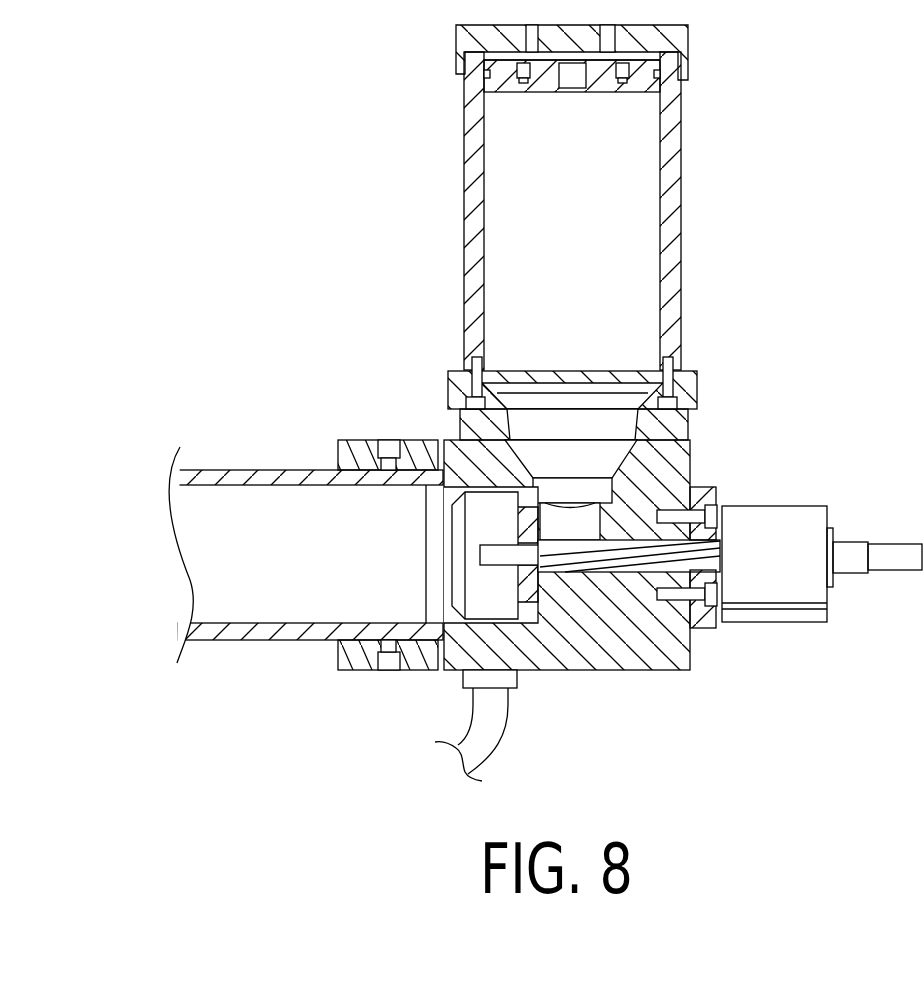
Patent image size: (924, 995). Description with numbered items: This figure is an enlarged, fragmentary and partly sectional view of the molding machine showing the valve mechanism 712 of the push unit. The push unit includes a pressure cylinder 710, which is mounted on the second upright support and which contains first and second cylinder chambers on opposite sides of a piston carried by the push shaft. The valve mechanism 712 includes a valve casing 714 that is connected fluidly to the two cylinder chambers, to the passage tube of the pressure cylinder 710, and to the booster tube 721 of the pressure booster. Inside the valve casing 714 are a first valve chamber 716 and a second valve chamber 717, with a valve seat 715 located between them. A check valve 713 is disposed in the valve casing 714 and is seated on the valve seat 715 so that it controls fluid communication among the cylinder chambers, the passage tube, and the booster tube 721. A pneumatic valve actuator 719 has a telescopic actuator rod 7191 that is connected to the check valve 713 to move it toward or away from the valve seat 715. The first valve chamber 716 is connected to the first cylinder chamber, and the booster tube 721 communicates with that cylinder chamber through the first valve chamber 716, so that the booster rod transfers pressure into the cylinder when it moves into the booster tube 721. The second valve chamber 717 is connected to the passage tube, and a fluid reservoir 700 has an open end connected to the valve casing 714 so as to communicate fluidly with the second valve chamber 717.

The fluid reservoir 700 is at (683, 188).
The pressure cylinder 710 is at (243, 468).
The valve mechanism 712 is at (424, 376).
The check valve 713 is at (550, 585).
The valve casing 714 is at (696, 458).
The valve seat 715 is at (525, 506).
The first valve chamber 716 is at (477, 600).
The second valve chamber 717 is at (570, 528).
The pneumatic valve actuator 719 is at (768, 507).
The telescopic actuator rod 7191 is at (637, 557).
The booster tube 721 is at (483, 728).